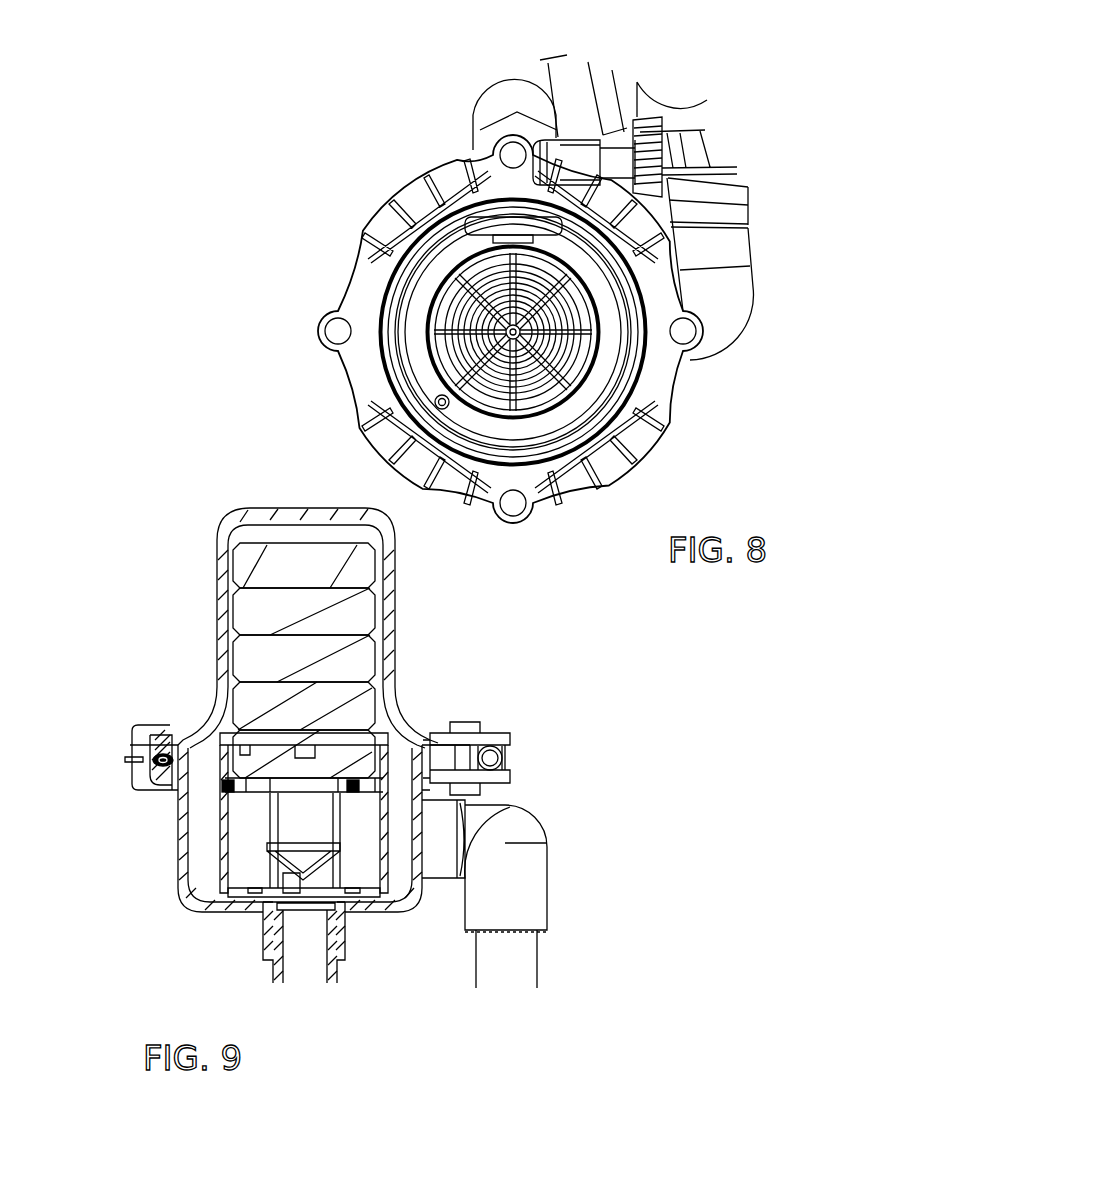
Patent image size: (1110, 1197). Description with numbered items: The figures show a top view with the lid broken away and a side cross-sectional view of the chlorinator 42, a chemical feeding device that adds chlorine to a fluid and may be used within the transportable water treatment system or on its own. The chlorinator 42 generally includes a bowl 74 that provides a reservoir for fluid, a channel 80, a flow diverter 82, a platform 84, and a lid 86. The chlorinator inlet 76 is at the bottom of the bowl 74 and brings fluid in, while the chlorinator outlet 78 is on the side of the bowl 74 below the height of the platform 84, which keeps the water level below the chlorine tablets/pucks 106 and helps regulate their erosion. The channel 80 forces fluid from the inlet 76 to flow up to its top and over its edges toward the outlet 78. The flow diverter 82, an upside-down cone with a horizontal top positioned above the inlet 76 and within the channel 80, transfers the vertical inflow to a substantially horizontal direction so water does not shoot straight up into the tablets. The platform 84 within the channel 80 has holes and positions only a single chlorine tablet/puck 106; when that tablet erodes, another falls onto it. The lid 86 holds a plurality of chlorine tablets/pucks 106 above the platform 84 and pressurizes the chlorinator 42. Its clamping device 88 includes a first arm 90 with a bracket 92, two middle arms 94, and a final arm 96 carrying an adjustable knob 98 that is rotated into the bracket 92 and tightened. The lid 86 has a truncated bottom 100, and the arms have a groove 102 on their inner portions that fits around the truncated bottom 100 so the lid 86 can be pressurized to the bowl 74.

In FIG. 8, the chlorinator 42 is at (325, 160).
In FIG. 9, the chlorinator 42 is at (176, 492).
In FIG. 9, the bowl 74 is at (173, 860).
In FIG. 9, the chlorinator inlet 76 is at (307, 970).
In FIG. 8, the chlorinator outlet 78 is at (722, 310).
In FIG. 9, the chlorinator outlet 78 is at (520, 850).
In FIG. 8, the channel 80 is at (425, 347).
In FIG. 9, the channel 80 is at (215, 820).
In FIG. 8, the flow diverter 82 is at (470, 262).
In FIG. 9, the flow diverter 82 is at (285, 868).
In FIG. 8, the platform 84 is at (440, 305).
In FIG. 9, the platform 84 is at (232, 783).
In FIG. 9, the lid 86 is at (217, 585).
In FIG. 8, the clamping device 88 is at (437, 127).
In FIG. 9, the clamping device 88 is at (466, 684).
In FIG. 8, the first arm 90 is at (683, 270).
In FIG. 8, the bracket 92 is at (552, 137).
In FIG. 9, the bracket 92 is at (510, 743).
In FIG. 8, the middle arms 94 is at (378, 435).
In FIG. 8, the final arm 96 is at (407, 197).
In FIG. 8, the adjustable knob 98 is at (653, 157).
In FIG. 9, the truncated bottom 100 is at (245, 783).
In FIG. 9, the groove 102 is at (140, 755).
In FIG. 9, the chlorine tablets/pucks 106 is at (360, 560).